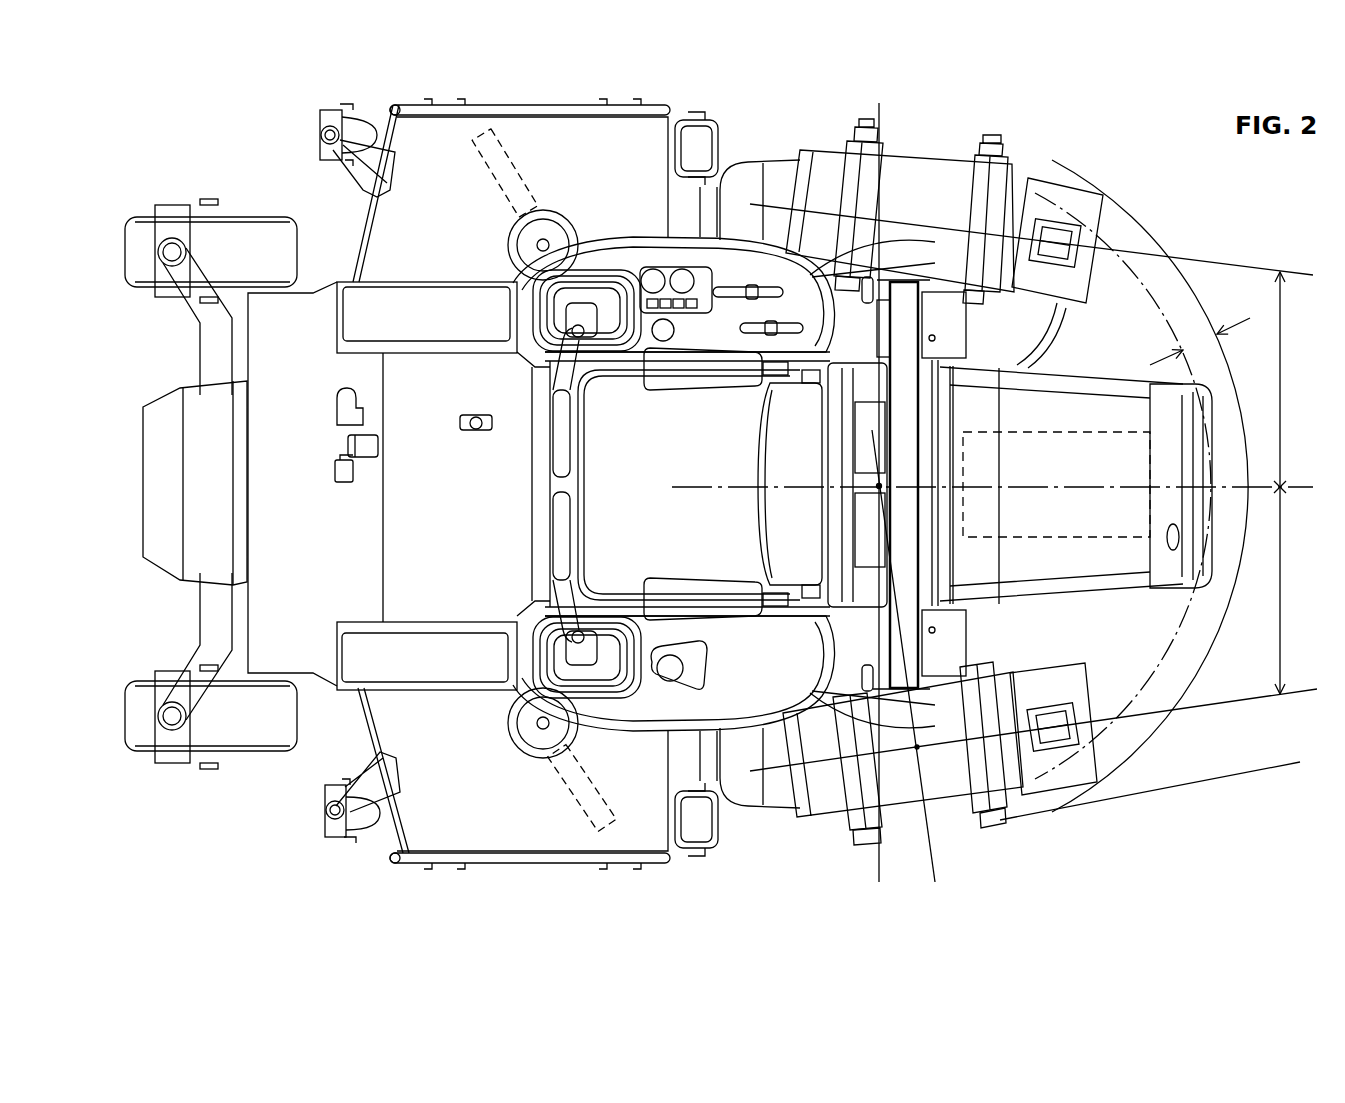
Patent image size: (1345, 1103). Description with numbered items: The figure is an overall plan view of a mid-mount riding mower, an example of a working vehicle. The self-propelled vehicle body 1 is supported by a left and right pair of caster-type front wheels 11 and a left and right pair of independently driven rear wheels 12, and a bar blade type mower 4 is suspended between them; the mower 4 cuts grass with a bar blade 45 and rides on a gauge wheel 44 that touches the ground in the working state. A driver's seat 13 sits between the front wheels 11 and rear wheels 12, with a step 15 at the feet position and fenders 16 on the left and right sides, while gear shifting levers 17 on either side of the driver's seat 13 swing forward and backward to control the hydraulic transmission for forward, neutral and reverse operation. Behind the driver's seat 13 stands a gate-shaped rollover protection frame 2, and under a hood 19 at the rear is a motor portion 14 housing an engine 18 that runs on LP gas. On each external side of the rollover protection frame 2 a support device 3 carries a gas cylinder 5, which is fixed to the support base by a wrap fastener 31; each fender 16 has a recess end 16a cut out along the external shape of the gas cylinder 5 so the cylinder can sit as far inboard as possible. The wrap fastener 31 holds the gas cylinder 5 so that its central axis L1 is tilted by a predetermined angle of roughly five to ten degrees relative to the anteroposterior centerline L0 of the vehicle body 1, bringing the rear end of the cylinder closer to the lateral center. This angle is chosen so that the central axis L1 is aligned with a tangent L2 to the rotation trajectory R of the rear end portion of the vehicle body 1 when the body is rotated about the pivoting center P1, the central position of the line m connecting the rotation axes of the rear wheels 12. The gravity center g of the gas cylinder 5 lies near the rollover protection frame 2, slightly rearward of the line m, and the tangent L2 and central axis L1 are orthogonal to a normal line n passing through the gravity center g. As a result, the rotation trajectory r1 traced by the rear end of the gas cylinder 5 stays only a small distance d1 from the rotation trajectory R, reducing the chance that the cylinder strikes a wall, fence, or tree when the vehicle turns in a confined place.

The self-propelled vehicle body 1 is at (195, 800).
The rollover protection frame 2 is at (876, 600).
The support device 3 is at (781, 172).
The mower 4 is at (360, 232).
The gas cylinder 5 is at (1030, 182).
The front wheels 11 is at (142, 288).
The rear wheels 12 is at (753, 162).
The driver's seat 13 is at (582, 530).
The motor portion 14 is at (1098, 604).
The step 15 is at (432, 677).
The fenders 16 is at (640, 237).
The recess end 16a is at (845, 262).
The gear shifting levers 17 is at (568, 497).
The engine 18 is at (1046, 430).
The hood 19 is at (1018, 372).
The wrap fastener 31 is at (968, 205).
The gauge wheel 44 is at (320, 135).
The bar blade 45 is at (492, 178).
The anteroposterior centerline L0 is at (735, 487).
The central axis L1 is at (1218, 265).
The tangent L2 is at (1193, 778).
The pivoting center P1 is at (879, 486).
The rotation trajectory R is at (1150, 293).
The rotation trajectory r1 is at (1150, 235).
The distance d1 is at (1200, 340).
The gravity center g is at (918, 745).
The line connecting the rotation axes of the rear wheels m is at (875, 872).
The normal line n is at (937, 868).